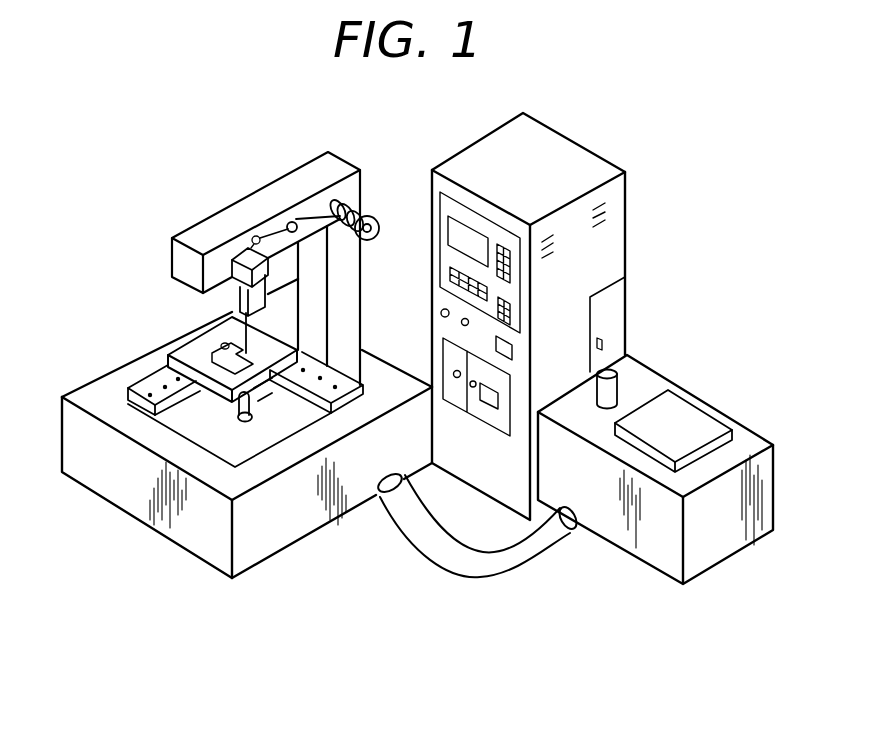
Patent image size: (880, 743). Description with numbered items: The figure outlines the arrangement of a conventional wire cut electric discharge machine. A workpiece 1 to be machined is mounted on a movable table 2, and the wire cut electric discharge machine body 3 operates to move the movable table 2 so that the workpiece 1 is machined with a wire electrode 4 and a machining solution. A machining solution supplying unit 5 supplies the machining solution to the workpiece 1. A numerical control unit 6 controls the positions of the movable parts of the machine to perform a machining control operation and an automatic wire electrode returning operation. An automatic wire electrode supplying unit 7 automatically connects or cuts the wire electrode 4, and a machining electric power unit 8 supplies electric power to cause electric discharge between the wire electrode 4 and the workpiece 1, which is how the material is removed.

The workpiece 1 is at (186, 347).
The movable table 2 is at (143, 382).
The wire cut electric discharge machine body 3 is at (247, 192).
The wire electrode 4 is at (362, 212).
The machining solution supplying unit 5 is at (675, 386).
The numerical control unit 6 is at (628, 222).
The automatic wire electrode supplying unit 7 is at (234, 262).
The machining electric power unit 8 is at (628, 322).